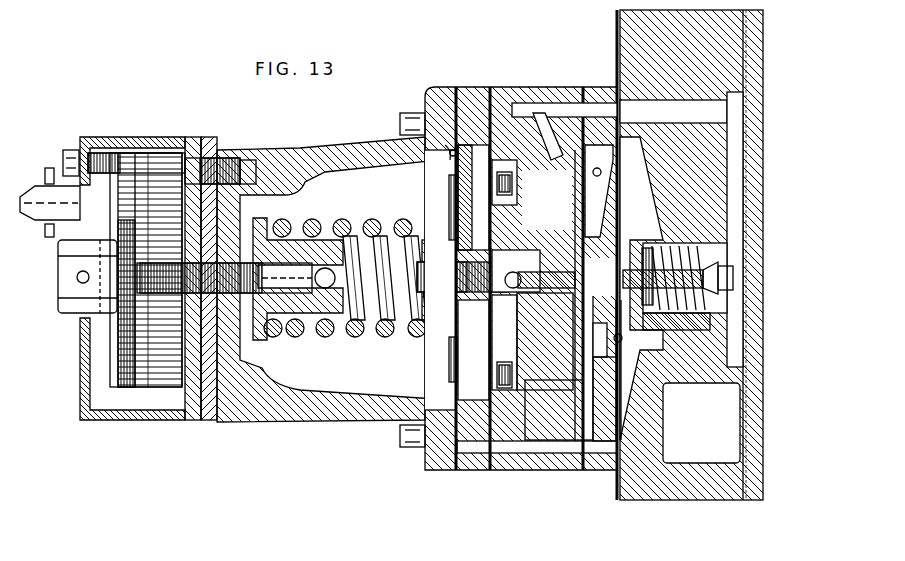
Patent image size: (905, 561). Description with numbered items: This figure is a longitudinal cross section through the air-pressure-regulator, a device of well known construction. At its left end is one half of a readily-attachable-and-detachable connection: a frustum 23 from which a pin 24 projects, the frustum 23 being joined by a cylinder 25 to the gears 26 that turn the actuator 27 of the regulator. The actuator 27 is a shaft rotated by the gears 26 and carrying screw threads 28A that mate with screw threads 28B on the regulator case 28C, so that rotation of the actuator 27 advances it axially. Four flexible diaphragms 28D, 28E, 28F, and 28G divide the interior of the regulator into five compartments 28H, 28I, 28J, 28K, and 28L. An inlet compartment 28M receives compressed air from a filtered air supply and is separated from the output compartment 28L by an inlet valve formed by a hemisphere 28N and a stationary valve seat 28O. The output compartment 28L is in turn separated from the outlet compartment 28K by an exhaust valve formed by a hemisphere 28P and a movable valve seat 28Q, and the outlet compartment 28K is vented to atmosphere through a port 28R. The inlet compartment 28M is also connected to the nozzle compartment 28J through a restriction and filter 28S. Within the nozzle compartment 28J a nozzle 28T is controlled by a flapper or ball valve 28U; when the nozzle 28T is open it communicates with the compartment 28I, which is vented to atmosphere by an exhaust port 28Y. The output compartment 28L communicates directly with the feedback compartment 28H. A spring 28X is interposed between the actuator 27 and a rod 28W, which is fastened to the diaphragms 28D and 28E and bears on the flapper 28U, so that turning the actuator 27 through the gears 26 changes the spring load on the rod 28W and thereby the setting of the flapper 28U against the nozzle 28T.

The frustum 23 is at (24, 212).
The pin 24 is at (50, 167).
The cylinder 25 is at (68, 217).
The gears 26 is at (160, 165).
The actuator 27 is at (58, 274).
The screw threads 28A is at (166, 384).
The screw threads 28B is at (250, 232).
The regulator case 28C is at (328, 147).
The flexible diaphragm 28D is at (452, 156).
The flexible diaphragm 28E is at (512, 176).
The flexible diaphragm 28F is at (578, 392).
The flexible diaphragm 28G is at (614, 340).
The feedback compartment 28H is at (476, 200).
The compartment 28I is at (523, 390).
The nozzle compartment 28J is at (577, 390).
The outlet compartment 28K is at (597, 393).
The output compartment 28L is at (725, 430).
The inlet compartment 28M is at (733, 210).
The hemisphere 28N is at (715, 276).
The stationary valve seat 28O is at (690, 315).
The hemisphere 28P is at (630, 268).
The movable valve seat 28Q is at (660, 332).
The port 28R is at (598, 168).
The restriction and filter 28S is at (557, 140).
The nozzle 28T is at (553, 300).
The flapper or ball valve 28U is at (520, 270).
The rod 28W is at (446, 332).
The spring 28X is at (366, 332).
The exhaust port 28Y is at (513, 271).